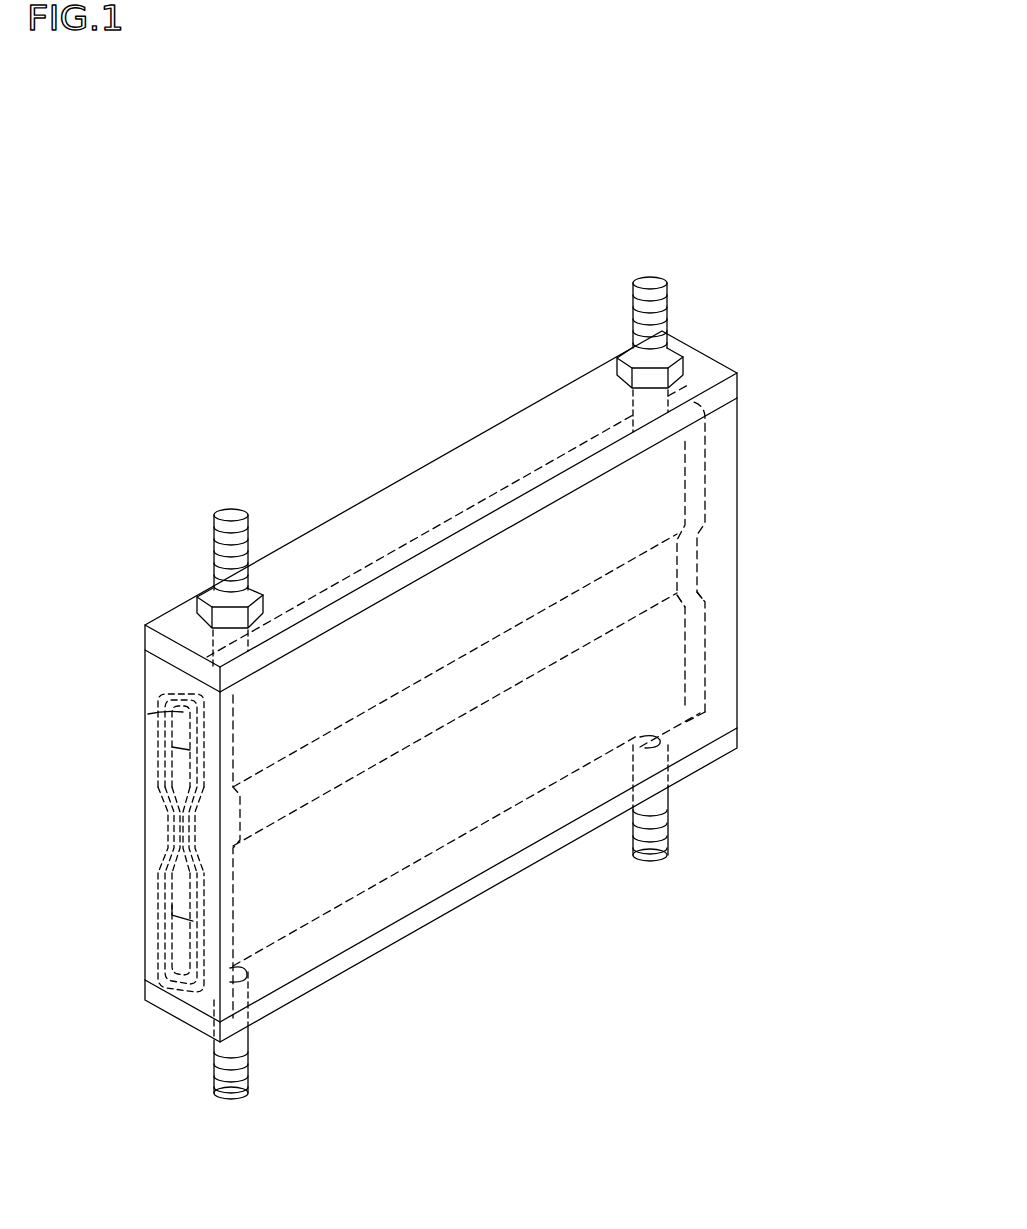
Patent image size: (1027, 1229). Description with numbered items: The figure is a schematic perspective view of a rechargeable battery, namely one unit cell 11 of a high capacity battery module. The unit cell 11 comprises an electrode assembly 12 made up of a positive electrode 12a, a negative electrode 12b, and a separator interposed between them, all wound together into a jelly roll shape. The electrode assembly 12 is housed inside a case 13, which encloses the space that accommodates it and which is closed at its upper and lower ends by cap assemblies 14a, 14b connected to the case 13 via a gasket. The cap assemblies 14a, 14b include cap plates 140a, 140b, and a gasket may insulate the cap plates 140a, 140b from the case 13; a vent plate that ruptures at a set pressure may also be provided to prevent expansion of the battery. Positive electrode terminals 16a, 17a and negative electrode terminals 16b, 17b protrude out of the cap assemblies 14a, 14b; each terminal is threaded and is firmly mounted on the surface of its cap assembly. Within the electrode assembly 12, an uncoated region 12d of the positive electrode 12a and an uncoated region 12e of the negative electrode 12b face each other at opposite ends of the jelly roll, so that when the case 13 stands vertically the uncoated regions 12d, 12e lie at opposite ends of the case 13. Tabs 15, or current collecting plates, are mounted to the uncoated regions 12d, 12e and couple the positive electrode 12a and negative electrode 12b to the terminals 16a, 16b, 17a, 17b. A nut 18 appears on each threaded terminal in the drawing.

The unit cell 11 is at (812, 410).
The electrode assembly 12 is at (368, 624).
The positive electrode 12a is at (160, 808).
The negative electrode 12b is at (712, 631).
The uncoated region of the positive electrode 12d is at (155, 855).
The uncoated region of the negative electrode 12e is at (688, 565).
The case 13 is at (738, 504).
The cap assembly 14a is at (412, 488).
The cap assembly 14b is at (368, 967).
The cap plate 140a is at (512, 438).
The cap plate 140b is at (481, 884).
The tab 15 is at (147, 727).
The positive electrode terminal 16a is at (227, 540).
The negative electrode terminal 16b is at (663, 298).
The positive electrode terminal 17a is at (227, 1063).
The negative electrode terminal 17b is at (636, 857).
The nut 18 is at (208, 607).